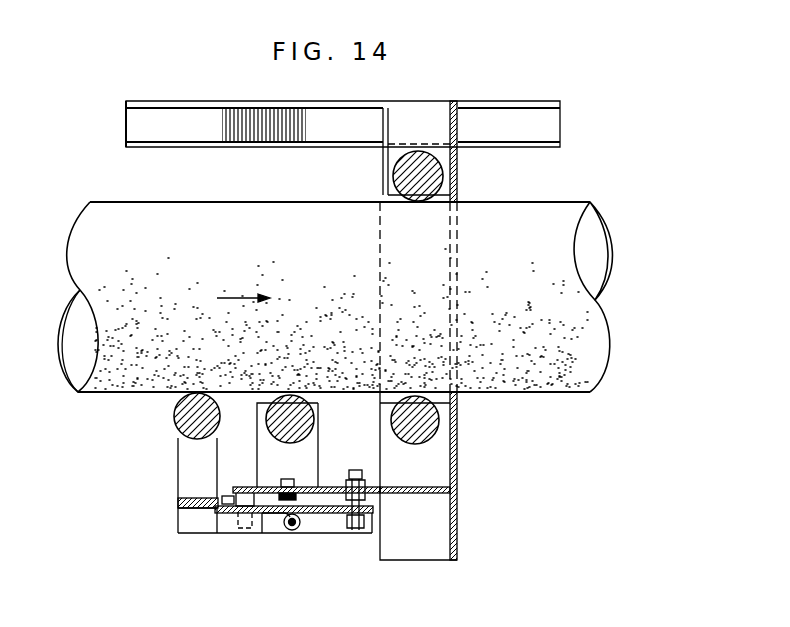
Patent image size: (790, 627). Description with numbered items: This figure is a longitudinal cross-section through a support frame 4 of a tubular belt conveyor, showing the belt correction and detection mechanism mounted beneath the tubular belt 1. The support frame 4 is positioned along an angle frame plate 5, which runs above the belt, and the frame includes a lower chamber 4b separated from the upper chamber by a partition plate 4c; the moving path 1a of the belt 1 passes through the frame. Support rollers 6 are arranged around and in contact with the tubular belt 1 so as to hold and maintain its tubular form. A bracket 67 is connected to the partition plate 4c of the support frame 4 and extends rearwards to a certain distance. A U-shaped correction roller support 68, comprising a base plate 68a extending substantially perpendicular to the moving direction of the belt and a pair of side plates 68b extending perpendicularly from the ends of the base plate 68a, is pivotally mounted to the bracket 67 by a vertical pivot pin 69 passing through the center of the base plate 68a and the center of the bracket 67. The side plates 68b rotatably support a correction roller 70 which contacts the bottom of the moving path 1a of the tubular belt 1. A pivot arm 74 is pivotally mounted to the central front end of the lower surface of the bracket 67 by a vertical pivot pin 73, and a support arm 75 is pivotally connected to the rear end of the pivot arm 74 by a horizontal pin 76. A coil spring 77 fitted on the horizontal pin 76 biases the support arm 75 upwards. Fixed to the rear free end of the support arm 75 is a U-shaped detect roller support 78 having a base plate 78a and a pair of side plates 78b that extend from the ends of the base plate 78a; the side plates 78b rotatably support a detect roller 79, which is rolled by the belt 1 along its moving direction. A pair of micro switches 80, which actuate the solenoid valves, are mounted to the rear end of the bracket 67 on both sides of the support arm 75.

The tubular belt 1 is at (613, 257).
The moving path 1a is at (605, 343).
The support frame 4 is at (460, 171).
The lower chamber 4b is at (456, 468).
The partition plate 4c is at (445, 494).
The angle frame plate 5 is at (562, 124).
The support roller 6 is at (440, 418).
The bracket 67 is at (242, 492).
The correction roller support 68 is at (263, 402).
The base plate 68a is at (308, 482).
The side plate 68b is at (313, 441).
The vertical pivot pin 69 is at (298, 486).
The correction roller 70 is at (296, 395).
The vertical pivot pin 73 is at (376, 500).
The pivot arm 74 is at (353, 532).
The support arm 75 is at (187, 533).
The horizontal pin 76 is at (297, 530).
The coil spring 77 is at (266, 514).
The detect roller support 78 is at (166, 448).
The base plate 78a is at (179, 498).
The side plate 78b is at (182, 478).
The detect roller 79 is at (196, 394).
The micro switch 80 is at (237, 502).